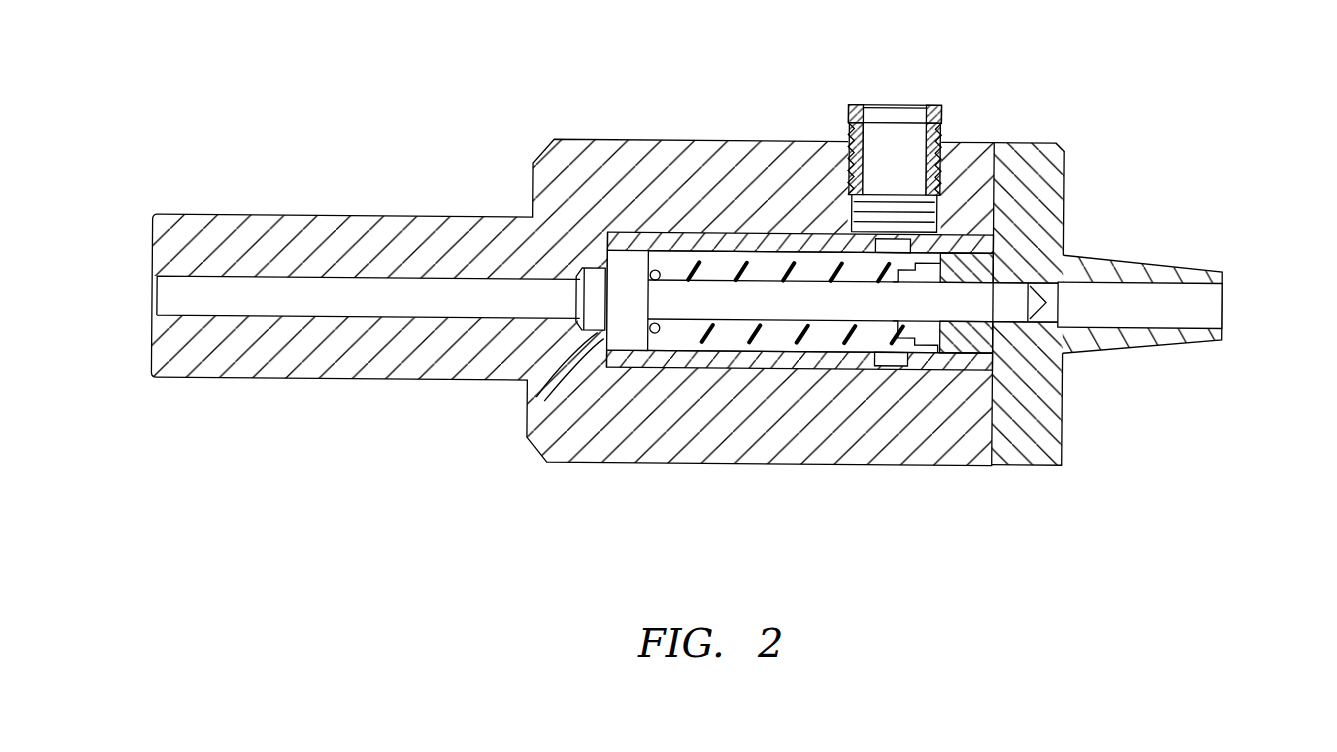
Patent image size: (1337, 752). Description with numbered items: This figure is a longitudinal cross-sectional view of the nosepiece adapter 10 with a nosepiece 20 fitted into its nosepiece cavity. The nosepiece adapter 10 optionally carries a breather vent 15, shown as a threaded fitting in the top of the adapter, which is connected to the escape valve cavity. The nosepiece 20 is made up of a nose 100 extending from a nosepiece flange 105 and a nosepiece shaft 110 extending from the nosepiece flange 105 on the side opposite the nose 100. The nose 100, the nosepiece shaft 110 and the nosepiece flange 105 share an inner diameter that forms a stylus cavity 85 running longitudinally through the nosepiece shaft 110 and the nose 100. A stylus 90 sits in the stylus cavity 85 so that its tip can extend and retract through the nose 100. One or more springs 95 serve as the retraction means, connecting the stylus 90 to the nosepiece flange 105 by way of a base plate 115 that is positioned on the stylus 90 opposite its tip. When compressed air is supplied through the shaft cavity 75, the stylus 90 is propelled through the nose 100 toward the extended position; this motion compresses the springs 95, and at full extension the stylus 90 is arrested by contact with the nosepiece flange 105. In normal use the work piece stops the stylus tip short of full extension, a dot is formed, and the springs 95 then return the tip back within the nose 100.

The nosepiece adapter 10 is at (67, 106).
The breather vent 15 is at (878, 102).
The nosepiece 20 is at (1300, 150).
The shaft cavity 75 is at (313, 299).
The stylus cavity 85 is at (1215, 305).
The stylus 90 is at (1015, 315).
The springs 95 is at (745, 265).
The nose 100 is at (1125, 262).
The nosepiece flange 105 is at (1055, 137).
The nosepiece shaft 110 is at (790, 354).
The base plate 115 is at (528, 411).